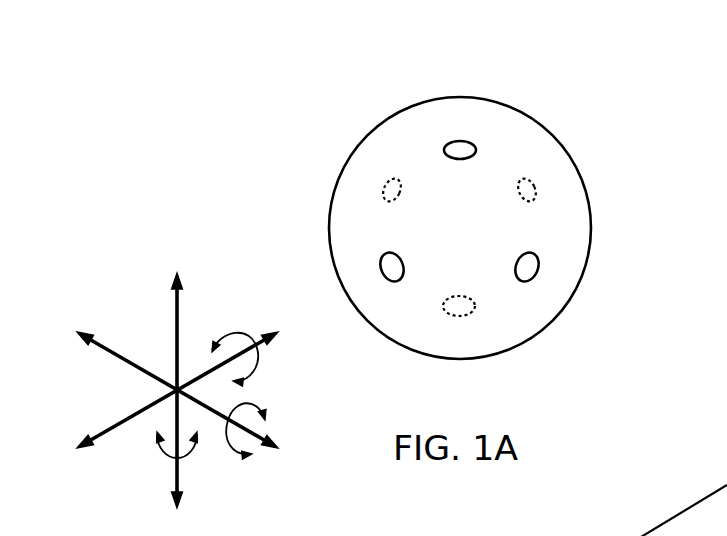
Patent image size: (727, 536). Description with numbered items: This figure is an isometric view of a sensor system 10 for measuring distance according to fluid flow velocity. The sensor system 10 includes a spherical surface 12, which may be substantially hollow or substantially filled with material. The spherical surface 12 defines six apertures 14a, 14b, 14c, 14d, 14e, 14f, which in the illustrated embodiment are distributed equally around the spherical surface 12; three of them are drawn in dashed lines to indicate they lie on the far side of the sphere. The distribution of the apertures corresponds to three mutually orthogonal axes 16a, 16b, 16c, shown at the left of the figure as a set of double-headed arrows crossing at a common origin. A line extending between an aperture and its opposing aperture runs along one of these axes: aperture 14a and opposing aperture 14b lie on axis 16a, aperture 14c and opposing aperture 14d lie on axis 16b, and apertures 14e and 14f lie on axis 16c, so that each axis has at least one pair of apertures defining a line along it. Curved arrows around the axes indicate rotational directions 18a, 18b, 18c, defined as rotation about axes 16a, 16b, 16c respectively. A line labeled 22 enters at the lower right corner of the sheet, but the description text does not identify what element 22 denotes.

The sensor system 10 is at (498, 214).
The spherical surface 12 is at (577, 218).
The aperture 14a is at (381, 258).
The aperture 14b is at (535, 182).
The aperture 14c is at (458, 141).
The aperture 14d is at (476, 310).
The aperture 14e is at (538, 267).
The aperture 14f is at (385, 182).
The axis 16a is at (122, 417).
The axis 16b is at (179, 312).
The axis 16c is at (114, 350).
The rotational direction 18a is at (238, 328).
The rotational direction 18b is at (150, 450).
The rotational direction 18c is at (264, 404).
The adjacent structure edge 22 is at (647, 534).